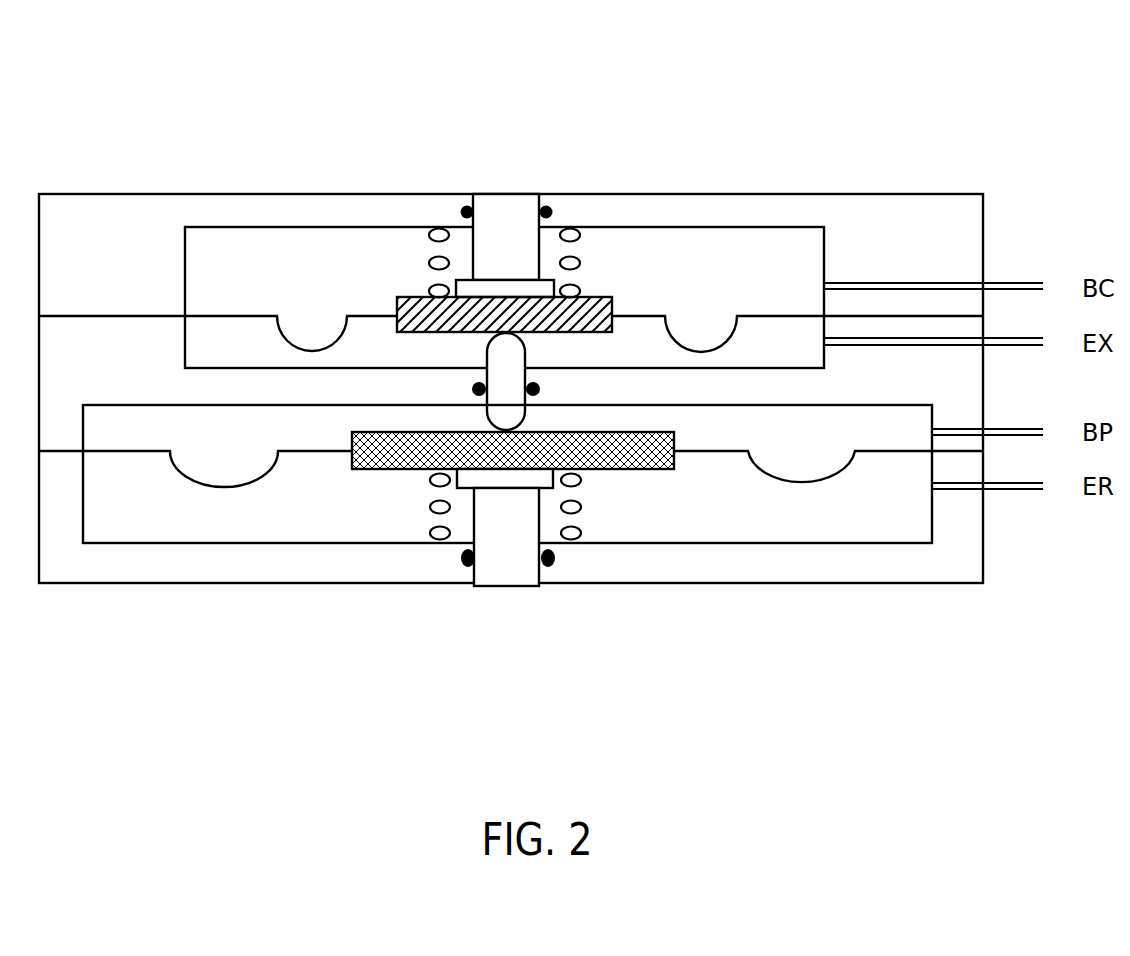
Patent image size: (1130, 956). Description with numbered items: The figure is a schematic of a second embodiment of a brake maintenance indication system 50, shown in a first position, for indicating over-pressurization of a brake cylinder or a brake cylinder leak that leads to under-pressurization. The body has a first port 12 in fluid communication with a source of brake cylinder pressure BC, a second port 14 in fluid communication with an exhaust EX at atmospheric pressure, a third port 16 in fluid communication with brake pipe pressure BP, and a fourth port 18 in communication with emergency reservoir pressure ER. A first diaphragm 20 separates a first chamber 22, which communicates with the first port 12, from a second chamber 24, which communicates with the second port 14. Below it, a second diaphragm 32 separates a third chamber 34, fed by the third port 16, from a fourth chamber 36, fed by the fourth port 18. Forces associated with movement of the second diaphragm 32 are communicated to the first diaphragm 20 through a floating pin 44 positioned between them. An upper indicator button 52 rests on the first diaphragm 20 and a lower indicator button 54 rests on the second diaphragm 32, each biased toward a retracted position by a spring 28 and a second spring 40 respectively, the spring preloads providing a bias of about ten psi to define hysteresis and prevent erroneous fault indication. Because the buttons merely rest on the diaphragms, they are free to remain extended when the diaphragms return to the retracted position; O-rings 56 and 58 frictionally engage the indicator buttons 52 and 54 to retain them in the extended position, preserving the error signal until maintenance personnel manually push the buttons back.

The brake maintenance indication system 50 is at (388, 86).
The first port 12 is at (997, 282).
The second port 14 is at (992, 346).
The third port 16 is at (1008, 428).
The fourth port 18 is at (1008, 490).
The first diaphragm 20 is at (230, 316).
The first chamber 22 is at (317, 253).
The second chamber 24 is at (783, 341).
The spring 28 is at (583, 229).
The second diaphragm 32 is at (107, 452).
The third chamber 34 is at (108, 431).
The fourth chamber 36 is at (281, 513).
The second spring 40 is at (585, 511).
The floating pin 44 is at (525, 362).
The indicator button 52 is at (507, 193).
The indicator button 54 is at (493, 588).
The O-ring 56 is at (464, 208).
The O-ring 58 is at (548, 567).